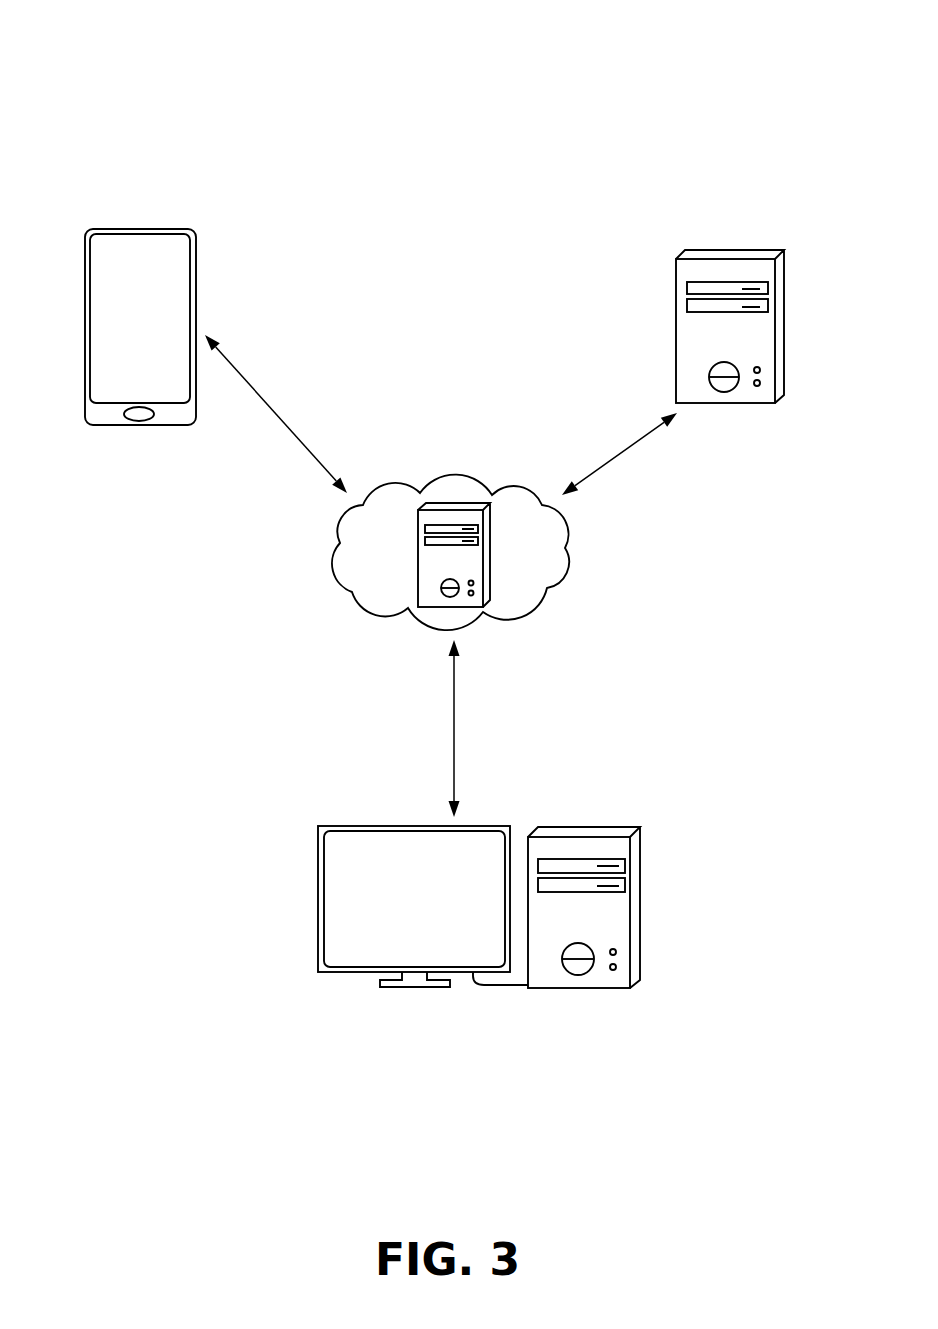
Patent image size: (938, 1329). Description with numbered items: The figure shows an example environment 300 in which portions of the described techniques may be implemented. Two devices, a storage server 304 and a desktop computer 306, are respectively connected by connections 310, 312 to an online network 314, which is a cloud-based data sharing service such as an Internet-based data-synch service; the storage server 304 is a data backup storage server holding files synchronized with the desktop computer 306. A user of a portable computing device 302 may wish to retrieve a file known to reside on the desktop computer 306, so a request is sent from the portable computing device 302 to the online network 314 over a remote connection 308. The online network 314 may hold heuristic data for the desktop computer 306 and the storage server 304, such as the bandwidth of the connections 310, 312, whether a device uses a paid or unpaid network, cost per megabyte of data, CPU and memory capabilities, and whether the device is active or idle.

The environment 300 is at (151, 54).
The portable computing device 302 is at (137, 229).
The data backup storage server 304 is at (730, 250).
The desktop computer 306 is at (318, 898).
The remote connection 308 is at (273, 410).
The connection 310 is at (625, 452).
The connection 312 is at (454, 710).
The online network 314 is at (348, 603).